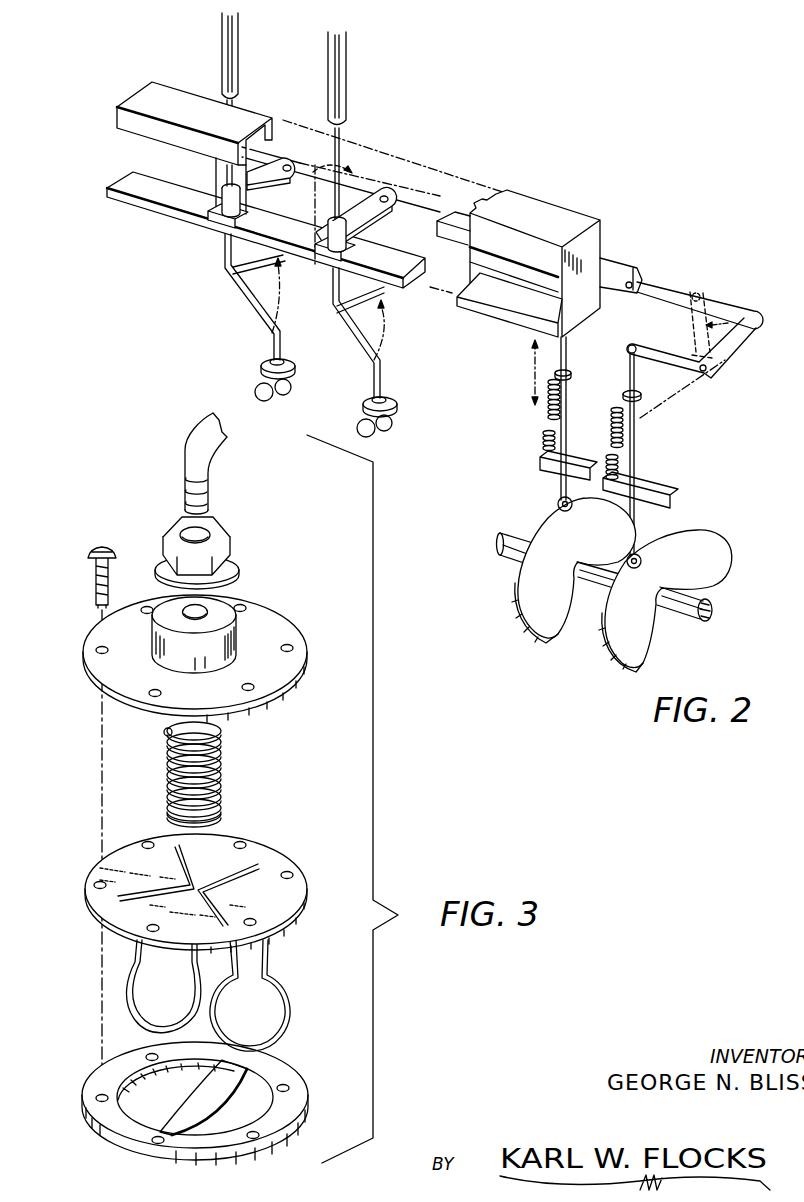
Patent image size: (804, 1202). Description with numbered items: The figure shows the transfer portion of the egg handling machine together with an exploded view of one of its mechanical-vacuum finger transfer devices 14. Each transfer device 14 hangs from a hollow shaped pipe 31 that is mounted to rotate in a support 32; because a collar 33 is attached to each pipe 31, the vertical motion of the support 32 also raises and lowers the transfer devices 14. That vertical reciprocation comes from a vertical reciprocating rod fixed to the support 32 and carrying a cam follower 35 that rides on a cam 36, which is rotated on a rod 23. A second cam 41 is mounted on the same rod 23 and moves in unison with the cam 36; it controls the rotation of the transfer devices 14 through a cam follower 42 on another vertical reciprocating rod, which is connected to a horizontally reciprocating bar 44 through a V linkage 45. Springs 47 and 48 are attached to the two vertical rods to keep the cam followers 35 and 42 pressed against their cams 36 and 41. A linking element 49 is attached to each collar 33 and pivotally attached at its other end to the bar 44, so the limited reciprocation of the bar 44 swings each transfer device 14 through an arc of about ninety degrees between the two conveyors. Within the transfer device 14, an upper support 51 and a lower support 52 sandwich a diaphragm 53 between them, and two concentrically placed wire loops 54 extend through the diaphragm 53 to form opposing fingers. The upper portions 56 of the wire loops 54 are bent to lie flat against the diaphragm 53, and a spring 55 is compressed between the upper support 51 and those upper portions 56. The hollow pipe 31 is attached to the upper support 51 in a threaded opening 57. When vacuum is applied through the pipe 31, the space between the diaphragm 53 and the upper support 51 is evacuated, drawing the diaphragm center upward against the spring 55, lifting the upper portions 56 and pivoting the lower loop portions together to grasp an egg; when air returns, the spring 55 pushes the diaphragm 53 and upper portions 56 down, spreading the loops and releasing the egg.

In FIG. 2, the transfer device 14 is at (261, 365).
In FIG. 3, the transfer device 14 is at (85, 773).
In FIG. 2, the rod 23 is at (713, 612).
In FIG. 2, the hollow shaped pipe 31 is at (262, 316).
In FIG. 3, the hollow shaped pipe 31 is at (205, 450).
In FIG. 2, the support 32 is at (560, 218).
In FIG. 2, the collar 33 is at (348, 234).
In FIG. 2, the cam follower 35 is at (557, 503).
In FIG. 2, the cam 36 is at (519, 583).
In FIG. 2, the cam 41 is at (627, 648).
In FIG. 2, the cam follower 42 is at (642, 556).
In FIG. 2, the horizontally reciprocating bar 44 is at (628, 268).
In FIG. 2, the V linkage 45 is at (758, 315).
In FIG. 2, the spring 47 is at (547, 432).
In FIG. 2, the spring 48 is at (616, 427).
In FIG. 2, the linking element 49 is at (398, 196).
In FIG. 3, the upper support 51 is at (282, 638).
In FIG. 3, the lower support 52 is at (297, 1085).
In FIG. 3, the diaphragm 53 is at (302, 867).
In FIG. 3, the wire loops 54 is at (290, 990).
In FIG. 3, the spring 55 is at (223, 782).
In FIG. 3, the upper portions 56 is at (173, 850).
In FIG. 3, the threaded opening 57 is at (207, 610).